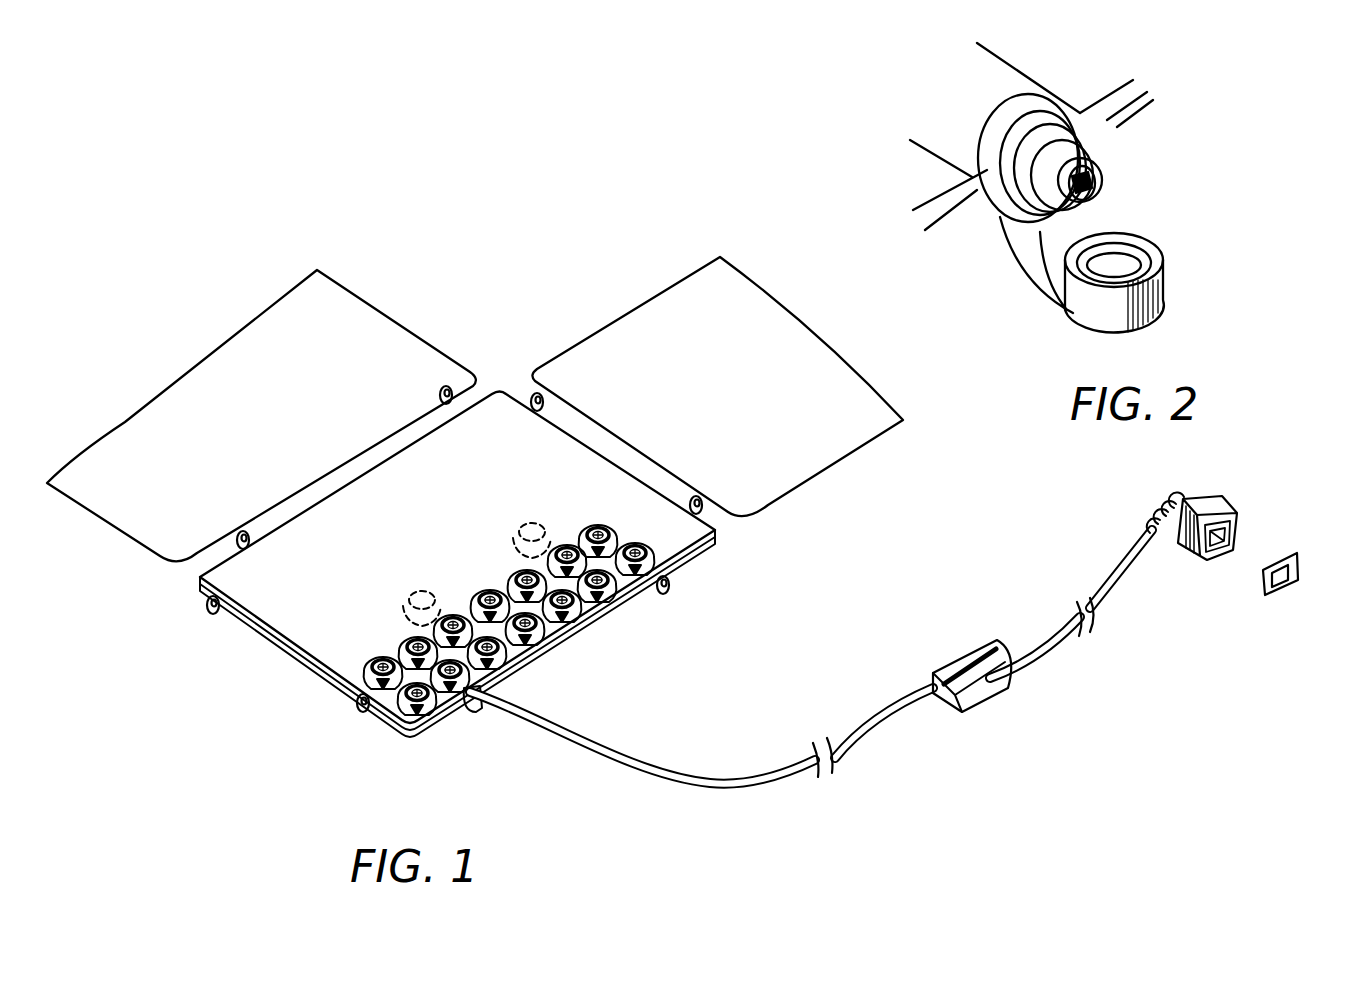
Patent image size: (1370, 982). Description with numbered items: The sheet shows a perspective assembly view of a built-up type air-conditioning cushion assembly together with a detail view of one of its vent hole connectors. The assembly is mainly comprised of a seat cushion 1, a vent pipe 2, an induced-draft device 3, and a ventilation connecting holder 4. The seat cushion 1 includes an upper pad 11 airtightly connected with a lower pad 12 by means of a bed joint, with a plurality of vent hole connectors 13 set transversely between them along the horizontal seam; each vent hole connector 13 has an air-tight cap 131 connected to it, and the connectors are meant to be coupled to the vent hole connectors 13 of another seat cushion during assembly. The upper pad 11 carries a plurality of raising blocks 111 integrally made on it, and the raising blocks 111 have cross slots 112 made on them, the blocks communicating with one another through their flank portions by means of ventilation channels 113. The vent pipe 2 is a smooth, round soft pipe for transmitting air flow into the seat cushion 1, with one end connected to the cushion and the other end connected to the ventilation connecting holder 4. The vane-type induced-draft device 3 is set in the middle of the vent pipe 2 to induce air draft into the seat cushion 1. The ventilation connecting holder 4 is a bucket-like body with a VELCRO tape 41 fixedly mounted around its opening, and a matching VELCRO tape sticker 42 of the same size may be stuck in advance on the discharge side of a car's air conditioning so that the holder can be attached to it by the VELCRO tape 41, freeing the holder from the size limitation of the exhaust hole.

In FIG. 1, the seat cushion 1 is at (475, 475).
In FIG. 1, the upper pad 11 is at (457, 565).
In FIG. 2, the upper pad 11 is at (1065, 116).
In FIG. 1, the lower pad 12 is at (253, 638).
In FIG. 2, the lower pad 12 is at (1107, 122).
In FIG. 1, the vent hole connector 13 is at (441, 405).
In FIG. 2, the vent hole connector 13 is at (1116, 213).
In FIG. 2, the air-tight cap 131 is at (1160, 287).
In FIG. 1, the raising block 111 is at (600, 527).
In FIG. 1, the cross slot 112 is at (625, 537).
In FIG. 1, the ventilation channel 113 is at (606, 618).
In FIG. 1, the vent pipe 2 is at (730, 780).
In FIG. 1, the induced-draft device 3 is at (977, 642).
In FIG. 1, the ventilation connecting holder 4 is at (1231, 482).
In FIG. 1, the VELCRO tape 41 is at (1238, 525).
In FIG. 1, the VELCRO tape sticker 42 is at (1297, 568).